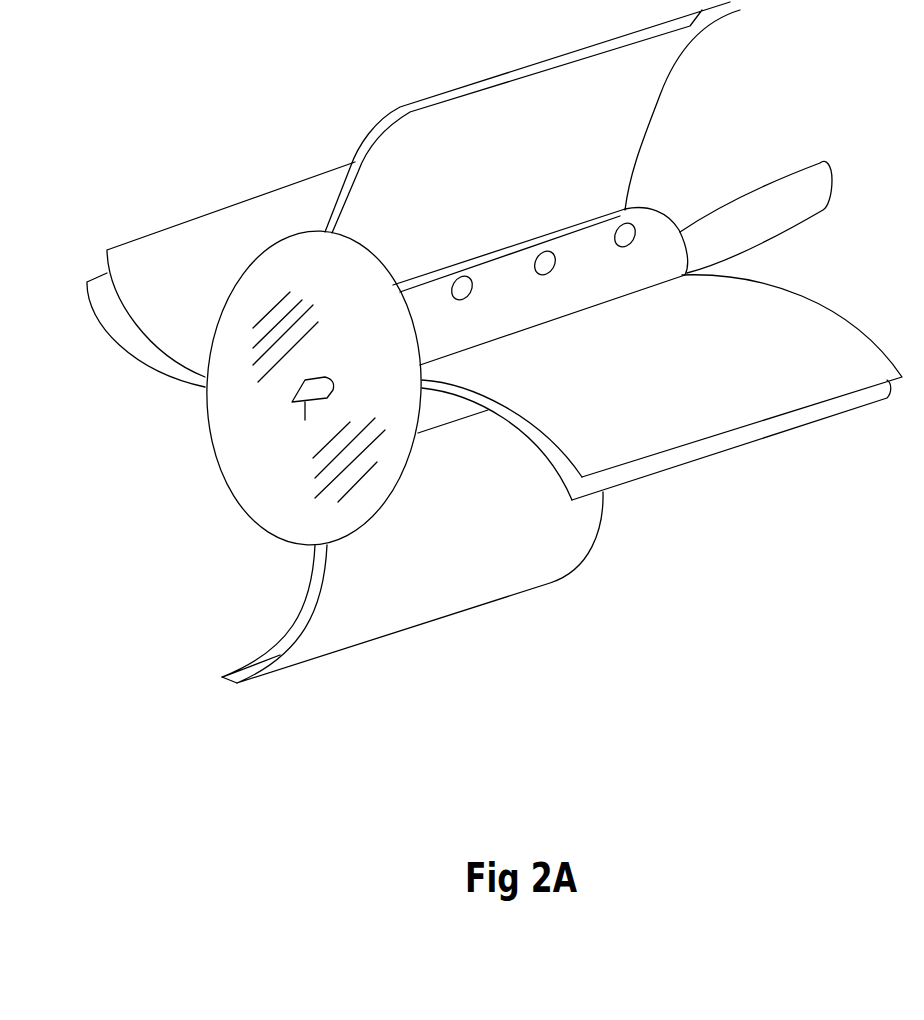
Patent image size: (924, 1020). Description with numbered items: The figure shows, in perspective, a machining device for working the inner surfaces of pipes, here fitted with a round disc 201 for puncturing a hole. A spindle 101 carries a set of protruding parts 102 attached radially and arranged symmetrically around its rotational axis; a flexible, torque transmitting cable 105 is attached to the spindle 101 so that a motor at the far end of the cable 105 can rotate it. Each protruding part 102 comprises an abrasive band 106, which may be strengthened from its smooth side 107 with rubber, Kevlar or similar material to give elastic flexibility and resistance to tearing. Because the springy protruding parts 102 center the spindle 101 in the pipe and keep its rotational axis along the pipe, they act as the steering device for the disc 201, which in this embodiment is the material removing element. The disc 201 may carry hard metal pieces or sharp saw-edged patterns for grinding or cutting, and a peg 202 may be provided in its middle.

The spindle 101 is at (665, 215).
The protruding parts 102 is at (228, 677).
The flexible torque transmitting cable 105 is at (832, 173).
The abrasive band 106 is at (562, 479).
The smooth side of the abrasive band 107 is at (413, 194).
The round disc 201 is at (230, 485).
The peg 202 is at (305, 406).